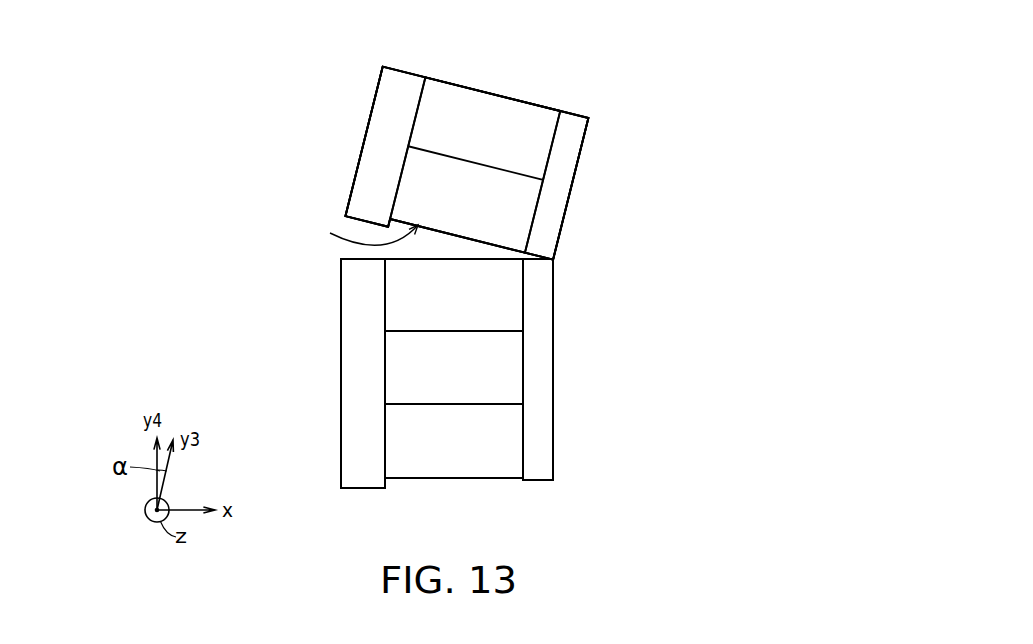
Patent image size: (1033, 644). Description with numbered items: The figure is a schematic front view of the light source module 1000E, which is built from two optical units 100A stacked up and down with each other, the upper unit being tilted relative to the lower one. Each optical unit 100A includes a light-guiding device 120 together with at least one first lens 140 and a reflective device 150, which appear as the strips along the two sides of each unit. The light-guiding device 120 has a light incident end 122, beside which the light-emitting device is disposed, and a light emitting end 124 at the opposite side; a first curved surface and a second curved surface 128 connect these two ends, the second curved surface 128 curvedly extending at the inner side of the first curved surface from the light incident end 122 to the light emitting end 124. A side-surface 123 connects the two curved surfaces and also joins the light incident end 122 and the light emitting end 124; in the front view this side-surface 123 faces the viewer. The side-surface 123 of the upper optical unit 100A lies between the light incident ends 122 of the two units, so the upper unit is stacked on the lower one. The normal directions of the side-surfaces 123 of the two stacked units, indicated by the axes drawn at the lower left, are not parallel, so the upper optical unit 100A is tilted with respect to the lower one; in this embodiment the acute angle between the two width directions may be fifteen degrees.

The light source module 1000E is at (735, 520).
The optical unit 100A is at (682, 407).
The light-guiding device 120 is at (510, 128).
The light incident end 122 is at (559, 143).
The light emitting end 124 is at (401, 92).
The second curved surface 128 is at (441, 111).
The side-surface 123 is at (356, 238).
The first lens 140 is at (358, 164).
The reflective device 150 is at (563, 229).